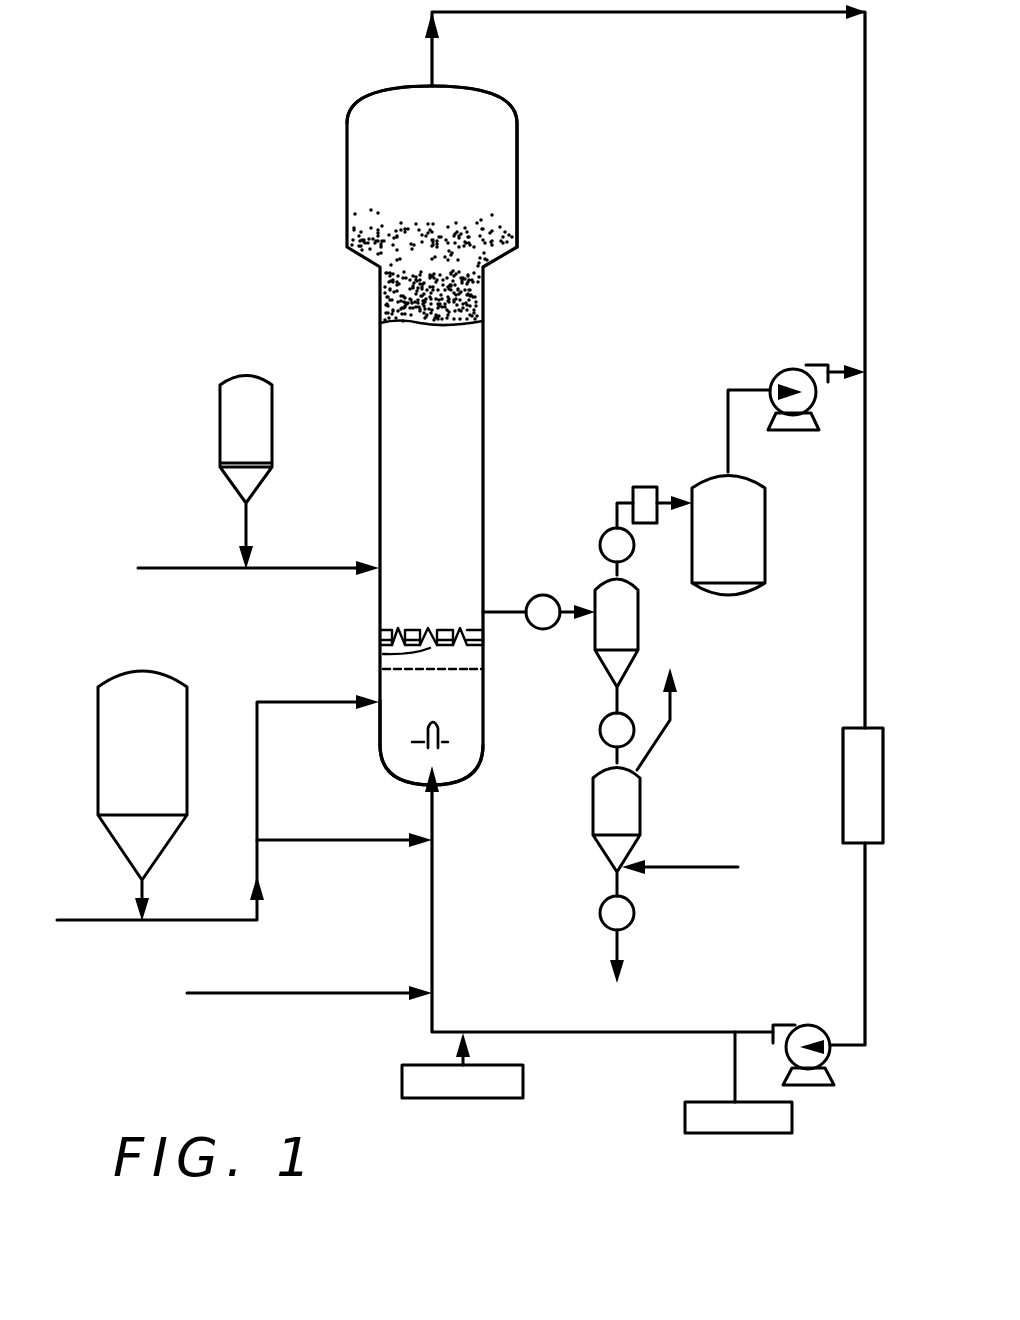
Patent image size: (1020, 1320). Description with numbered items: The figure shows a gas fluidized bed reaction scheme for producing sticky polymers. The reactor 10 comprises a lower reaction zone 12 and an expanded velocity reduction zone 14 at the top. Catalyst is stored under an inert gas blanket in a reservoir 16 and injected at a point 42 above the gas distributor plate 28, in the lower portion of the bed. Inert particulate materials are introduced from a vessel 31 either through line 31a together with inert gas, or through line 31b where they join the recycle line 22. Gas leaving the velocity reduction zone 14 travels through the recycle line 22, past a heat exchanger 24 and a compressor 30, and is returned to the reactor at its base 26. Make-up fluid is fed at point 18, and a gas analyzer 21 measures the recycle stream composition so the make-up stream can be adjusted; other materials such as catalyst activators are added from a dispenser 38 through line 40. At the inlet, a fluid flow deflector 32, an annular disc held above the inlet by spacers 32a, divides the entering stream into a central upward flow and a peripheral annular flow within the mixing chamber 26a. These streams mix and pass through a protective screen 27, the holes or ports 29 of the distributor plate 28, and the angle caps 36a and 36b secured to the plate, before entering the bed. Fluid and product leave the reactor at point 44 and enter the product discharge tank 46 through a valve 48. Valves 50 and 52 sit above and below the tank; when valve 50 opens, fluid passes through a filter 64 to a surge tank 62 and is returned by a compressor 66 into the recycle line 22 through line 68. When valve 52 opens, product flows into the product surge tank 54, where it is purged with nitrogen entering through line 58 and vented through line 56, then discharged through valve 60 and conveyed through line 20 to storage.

The reactor 10 is at (488, 410).
The reaction zone 12 is at (446, 472).
The velocity reduction zone 14 is at (500, 157).
The reservoir 16 is at (222, 402).
The point 18 is at (432, 986).
The line 20 is at (614, 950).
The gas analyzer 21 is at (700, 1102).
The recycle line 22 is at (865, 183).
The heat exchanger 24 is at (845, 825).
The point 26 is at (423, 770).
The mixing chamber 26a is at (400, 718).
The protective screen 27 is at (483, 668).
The gas distributor plate 28 is at (383, 653).
The holes or ports 29 is at (377, 663).
The compressor 30 is at (830, 1062).
The vessel 31 is at (153, 769).
The line 31a is at (258, 702).
The line 31b is at (290, 835).
The fluid flow deflector 32 is at (433, 724).
The spacers 32a is at (440, 748).
The angle cap 36a is at (400, 640).
The angle cap 36b is at (446, 629).
The dispenser 38 is at (523, 1085).
The line 40 is at (470, 1044).
The point 42 is at (378, 566).
The point 44 is at (497, 612).
The product discharge tank 46 is at (640, 625).
The valve 48 is at (555, 600).
The valve 50 is at (605, 532).
The valve 52 is at (604, 718).
The product surge tank 54 is at (593, 798).
The line 56 is at (670, 722).
The line 58 is at (665, 870).
The discharge valve 60 is at (603, 910).
The surge tank 62 is at (765, 518).
The filter 64 is at (645, 487).
The compressor 66 is at (785, 370).
The line 68 is at (840, 362).